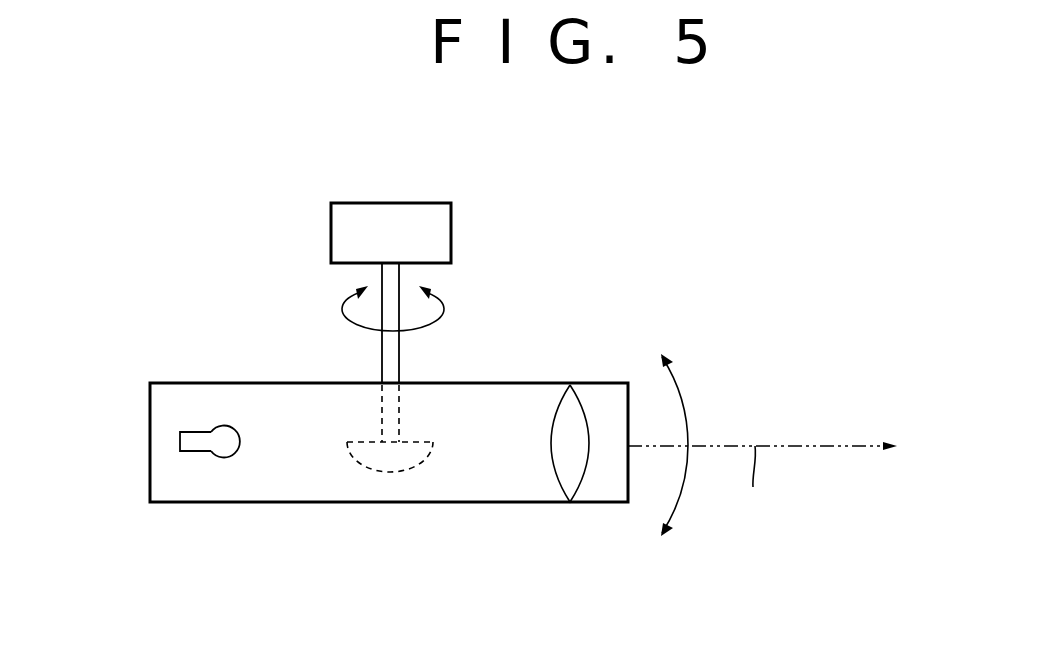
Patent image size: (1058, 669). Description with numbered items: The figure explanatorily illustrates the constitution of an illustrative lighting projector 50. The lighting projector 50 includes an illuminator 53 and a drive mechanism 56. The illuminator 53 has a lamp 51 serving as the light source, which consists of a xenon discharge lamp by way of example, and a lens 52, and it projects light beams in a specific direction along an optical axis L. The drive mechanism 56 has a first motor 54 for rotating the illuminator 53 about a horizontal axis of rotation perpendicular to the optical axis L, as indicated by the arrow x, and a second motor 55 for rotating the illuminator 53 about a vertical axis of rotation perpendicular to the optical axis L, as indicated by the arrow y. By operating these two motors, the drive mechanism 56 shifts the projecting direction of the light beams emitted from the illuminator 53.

The lighting projector 50 is at (604, 270).
The lamp 51 is at (180, 440).
The lens 52 is at (580, 493).
The illuminator 53 is at (215, 500).
The first motor 54 is at (397, 470).
The second motor 55 is at (330, 227).
The drive mechanism 56 is at (318, 335).